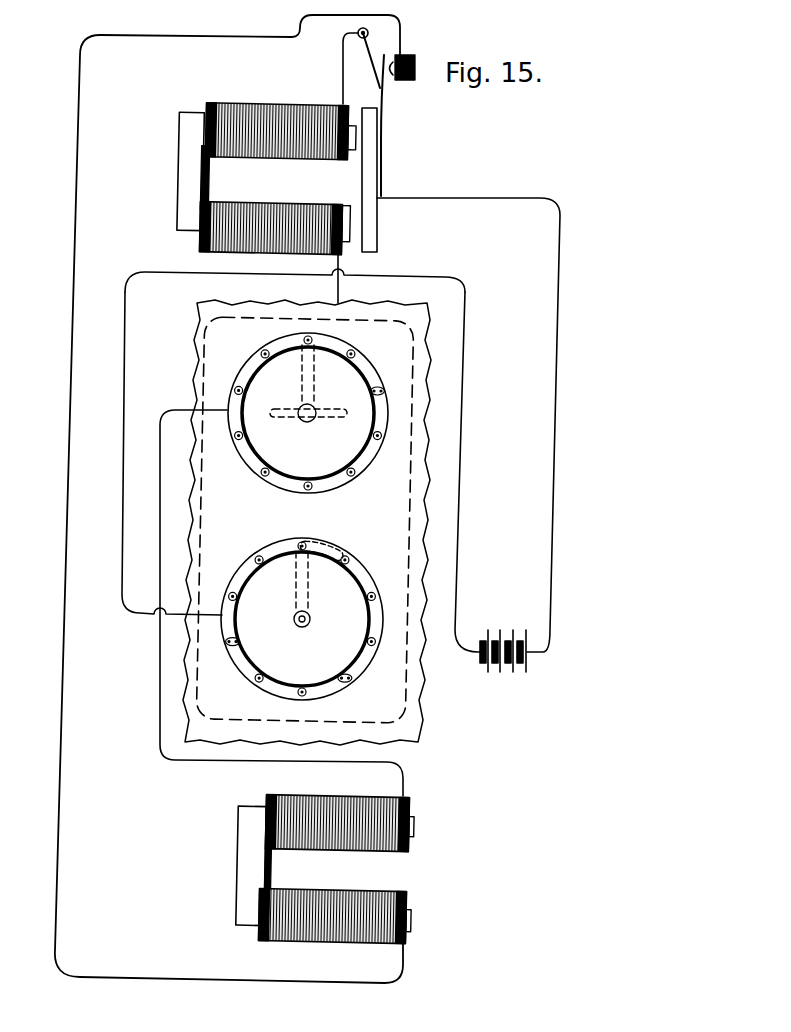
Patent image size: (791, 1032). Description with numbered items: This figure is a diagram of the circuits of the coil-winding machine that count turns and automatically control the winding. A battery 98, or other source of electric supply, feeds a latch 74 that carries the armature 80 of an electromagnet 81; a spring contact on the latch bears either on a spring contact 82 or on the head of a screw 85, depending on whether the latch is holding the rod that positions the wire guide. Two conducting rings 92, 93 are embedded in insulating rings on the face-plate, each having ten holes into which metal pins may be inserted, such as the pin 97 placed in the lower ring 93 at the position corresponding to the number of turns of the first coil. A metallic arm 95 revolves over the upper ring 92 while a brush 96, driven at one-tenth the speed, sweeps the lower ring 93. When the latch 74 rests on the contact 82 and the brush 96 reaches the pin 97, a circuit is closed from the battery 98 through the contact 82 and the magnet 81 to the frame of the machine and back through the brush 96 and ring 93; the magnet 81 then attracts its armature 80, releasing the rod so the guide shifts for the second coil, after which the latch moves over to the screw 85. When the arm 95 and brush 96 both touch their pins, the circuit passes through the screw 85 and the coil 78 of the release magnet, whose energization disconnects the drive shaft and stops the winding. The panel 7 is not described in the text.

The instrument panel 7 is at (418, 387).
The latch 74 is at (383, 118).
The release magnet coil 78 is at (324, 869).
The armature 80 is at (387, 180).
The electromagnet 81 is at (266, 208).
The spring contact 82 is at (362, 58).
The screw 85 is at (394, 52).
The conducting ring 92 is at (247, 375).
The conducting ring 93 is at (238, 580).
The metallic arm 95 is at (312, 377).
The brush 96 is at (330, 548).
The pin 97 is at (240, 642).
The battery 98 is at (493, 672).